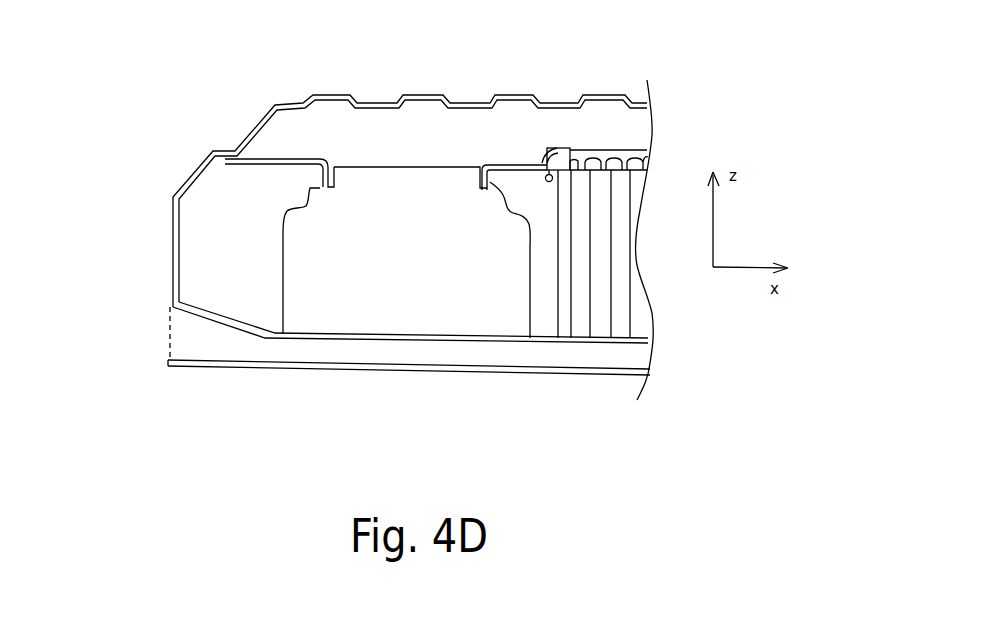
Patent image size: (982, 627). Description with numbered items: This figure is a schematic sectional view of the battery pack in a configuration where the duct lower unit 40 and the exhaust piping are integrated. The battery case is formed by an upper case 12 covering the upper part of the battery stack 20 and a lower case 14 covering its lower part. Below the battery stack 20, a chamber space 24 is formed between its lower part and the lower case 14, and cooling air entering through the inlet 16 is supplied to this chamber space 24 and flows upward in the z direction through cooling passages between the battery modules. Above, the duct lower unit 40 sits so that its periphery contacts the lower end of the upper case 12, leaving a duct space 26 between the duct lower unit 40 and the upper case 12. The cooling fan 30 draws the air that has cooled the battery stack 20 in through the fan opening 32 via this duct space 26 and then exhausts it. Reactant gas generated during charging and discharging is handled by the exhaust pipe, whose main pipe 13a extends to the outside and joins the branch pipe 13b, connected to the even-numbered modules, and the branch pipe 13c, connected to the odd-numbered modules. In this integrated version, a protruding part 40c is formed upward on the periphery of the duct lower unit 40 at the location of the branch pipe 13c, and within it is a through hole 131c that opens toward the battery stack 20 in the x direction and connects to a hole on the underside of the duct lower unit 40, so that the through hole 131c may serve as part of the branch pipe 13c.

The upper case 12 is at (470, 103).
The duct space 26 is at (377, 108).
The duct lower unit 40 is at (287, 158).
The protruding part 40c is at (543, 162).
The fan opening 32 is at (452, 168).
The through hole 131c is at (546, 178).
The main pipe 13a is at (552, 186).
The branch pipe 13b is at (608, 164).
The branch pipe 13c is at (645, 153).
The battery stack 20 is at (600, 317).
The cooling fan 30 is at (472, 298).
The inlet 16 is at (167, 328).
The chamber space 24 is at (232, 343).
The lower case 14 is at (412, 371).